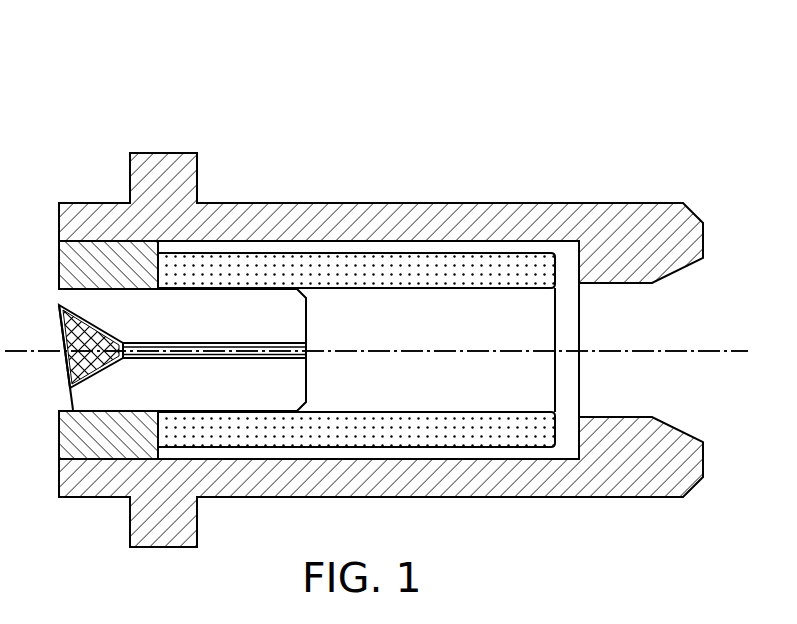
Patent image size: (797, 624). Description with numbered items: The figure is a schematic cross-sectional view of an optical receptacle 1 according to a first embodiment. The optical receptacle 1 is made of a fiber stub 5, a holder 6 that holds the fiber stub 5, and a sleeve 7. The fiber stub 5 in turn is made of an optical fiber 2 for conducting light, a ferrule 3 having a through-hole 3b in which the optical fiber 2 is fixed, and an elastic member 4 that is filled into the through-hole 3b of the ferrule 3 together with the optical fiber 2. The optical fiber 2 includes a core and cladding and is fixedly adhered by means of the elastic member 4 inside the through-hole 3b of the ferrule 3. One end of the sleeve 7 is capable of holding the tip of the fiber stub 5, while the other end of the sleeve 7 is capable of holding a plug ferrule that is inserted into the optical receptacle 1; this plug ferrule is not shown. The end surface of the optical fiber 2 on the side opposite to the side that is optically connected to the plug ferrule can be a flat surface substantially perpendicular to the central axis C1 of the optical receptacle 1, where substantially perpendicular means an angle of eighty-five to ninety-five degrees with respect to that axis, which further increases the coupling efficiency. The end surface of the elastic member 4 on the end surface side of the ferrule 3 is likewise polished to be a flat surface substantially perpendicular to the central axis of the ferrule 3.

The optical receptacle 1 is at (700, 87).
The optical fiber 2 is at (277, 343).
The ferrule 3 is at (245, 312).
The through-hole 3b is at (320, 350).
The elastic member 4 is at (85, 333).
The fiber stub 5 is at (300, 118).
The holder 6 is at (423, 223).
The sleeve 7 is at (522, 268).
The central axis of the optical receptacle C1 is at (615, 350).